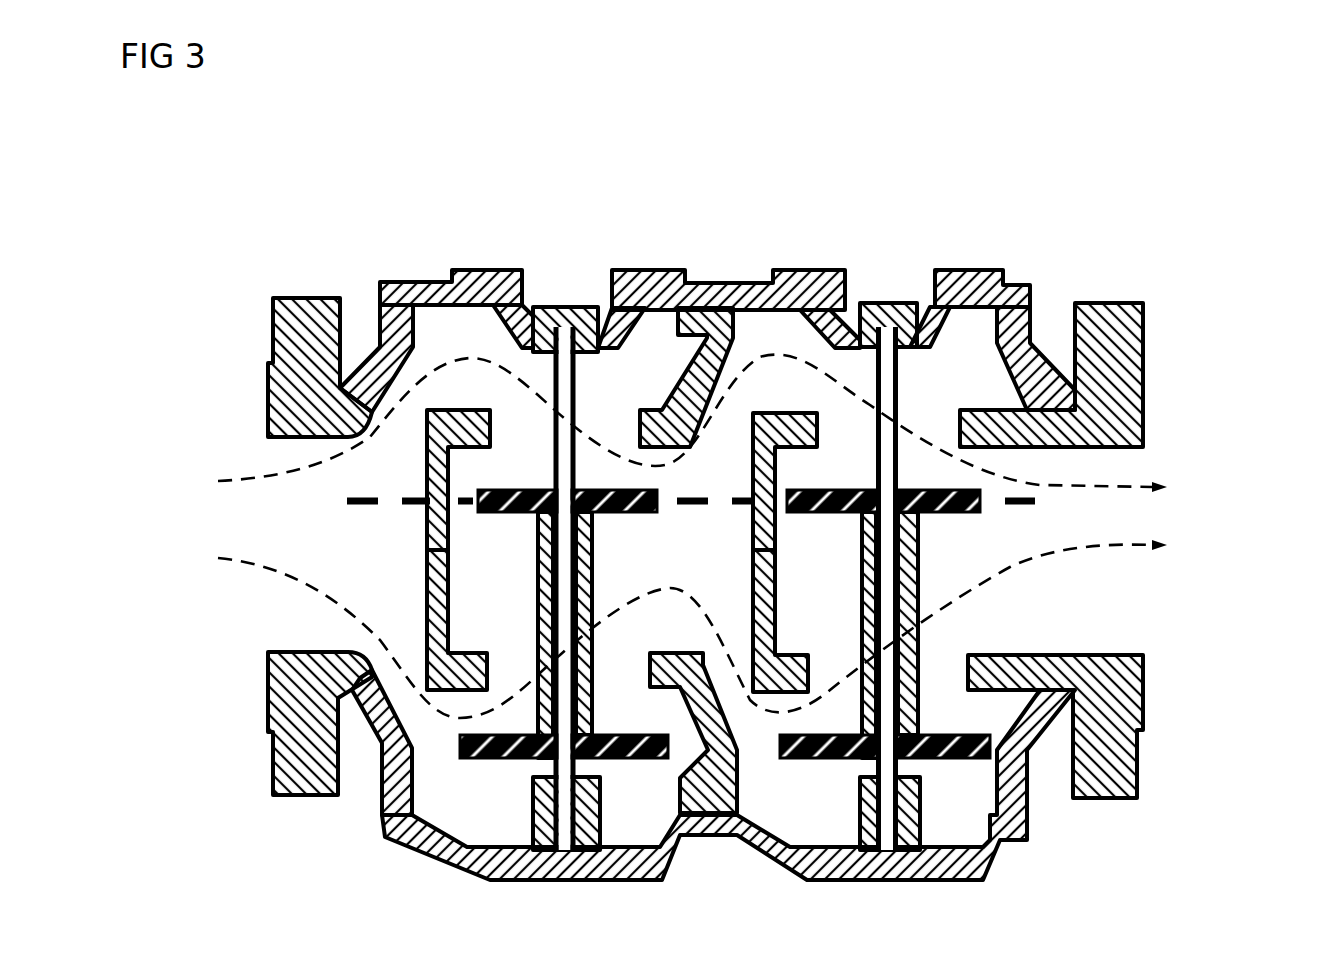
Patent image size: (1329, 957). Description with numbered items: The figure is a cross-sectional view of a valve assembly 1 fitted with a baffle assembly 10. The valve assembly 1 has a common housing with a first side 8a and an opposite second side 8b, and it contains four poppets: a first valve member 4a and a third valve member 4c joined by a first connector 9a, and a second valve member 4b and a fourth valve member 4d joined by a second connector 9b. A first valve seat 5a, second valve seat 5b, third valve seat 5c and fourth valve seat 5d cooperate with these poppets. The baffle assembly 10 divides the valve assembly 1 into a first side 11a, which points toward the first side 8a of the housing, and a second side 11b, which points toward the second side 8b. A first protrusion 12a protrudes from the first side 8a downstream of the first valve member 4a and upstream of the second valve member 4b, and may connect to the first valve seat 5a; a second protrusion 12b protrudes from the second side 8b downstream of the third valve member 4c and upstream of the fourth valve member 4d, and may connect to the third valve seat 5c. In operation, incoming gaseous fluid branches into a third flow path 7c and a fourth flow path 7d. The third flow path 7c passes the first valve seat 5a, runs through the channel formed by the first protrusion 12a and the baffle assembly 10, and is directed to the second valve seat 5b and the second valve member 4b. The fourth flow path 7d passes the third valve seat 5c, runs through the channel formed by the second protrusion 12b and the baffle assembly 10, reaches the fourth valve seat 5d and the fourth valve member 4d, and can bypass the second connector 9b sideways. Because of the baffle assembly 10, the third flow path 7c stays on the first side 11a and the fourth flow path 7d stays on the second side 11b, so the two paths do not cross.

The valve assembly 1 is at (1215, 232).
The first valve member 4a is at (568, 515).
The second valve member 4b is at (883, 516).
The third valve member 4c is at (564, 761).
The fourth valve member 4d is at (885, 761).
The first valve seat 5a is at (478, 480).
The second valve seat 5b is at (806, 481).
The third valve seat 5c is at (474, 620).
The fourth valve seat 5d is at (801, 621).
The third flow path 7c is at (663, 424).
The fourth flow path 7d is at (663, 629).
The first side of the common housing 8a is at (297, 367).
The second side of the common housing 8b is at (300, 723).
The first connector 9a is at (530, 635).
The second connector 9b is at (852, 635).
The baffle assembly 10 is at (672, 507).
The first side of the valve assembly 11a is at (712, 477).
The second side of the valve assembly 11b is at (713, 524).
The first protrusion 12a is at (686, 377).
The second protrusion 12b is at (688, 733).